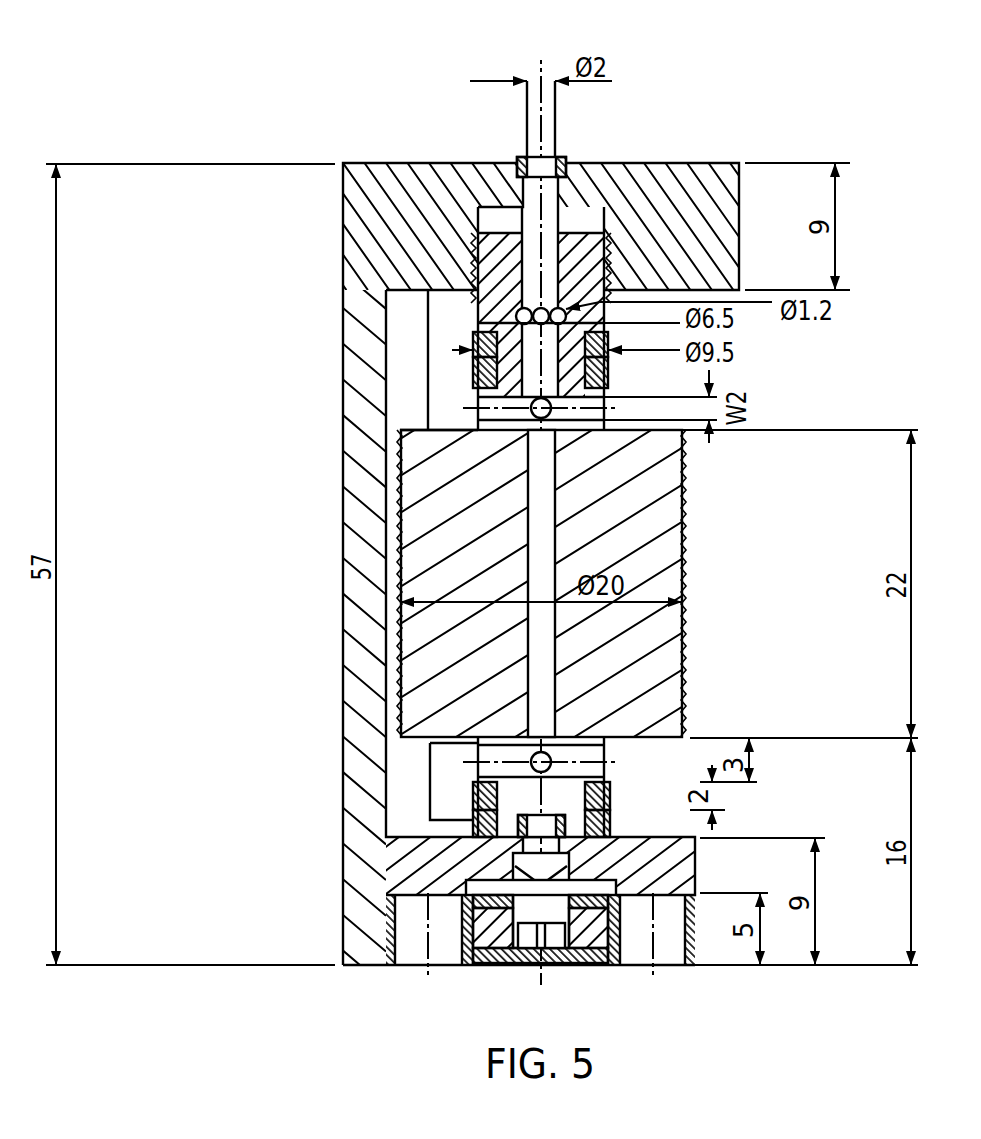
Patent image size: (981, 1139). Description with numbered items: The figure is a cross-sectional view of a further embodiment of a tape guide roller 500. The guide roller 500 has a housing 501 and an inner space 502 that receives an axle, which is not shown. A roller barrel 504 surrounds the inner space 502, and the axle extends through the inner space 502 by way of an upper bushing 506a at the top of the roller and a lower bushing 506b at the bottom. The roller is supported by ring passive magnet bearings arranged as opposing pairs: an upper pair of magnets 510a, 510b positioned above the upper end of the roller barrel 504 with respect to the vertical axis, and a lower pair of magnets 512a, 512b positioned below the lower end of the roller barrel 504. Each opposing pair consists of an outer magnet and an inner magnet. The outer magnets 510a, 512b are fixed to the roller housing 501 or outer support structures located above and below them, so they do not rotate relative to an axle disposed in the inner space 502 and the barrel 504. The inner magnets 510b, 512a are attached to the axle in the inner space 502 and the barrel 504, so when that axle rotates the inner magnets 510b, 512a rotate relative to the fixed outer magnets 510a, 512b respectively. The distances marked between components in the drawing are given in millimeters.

The guide roller 500 is at (722, 137).
The housing 501 is at (365, 577).
The inner space 502 is at (550, 80).
The roller barrel 504 is at (682, 503).
The upper bushing 506a is at (560, 157).
The lower bushing 506b is at (565, 830).
The upper outer ring passive magnet 510a is at (473, 340).
The upper inner ring passive magnet 510b is at (473, 378).
The lower inner ring passive magnet 512a is at (607, 785).
The lower outer ring passive magnet 512b is at (608, 822).